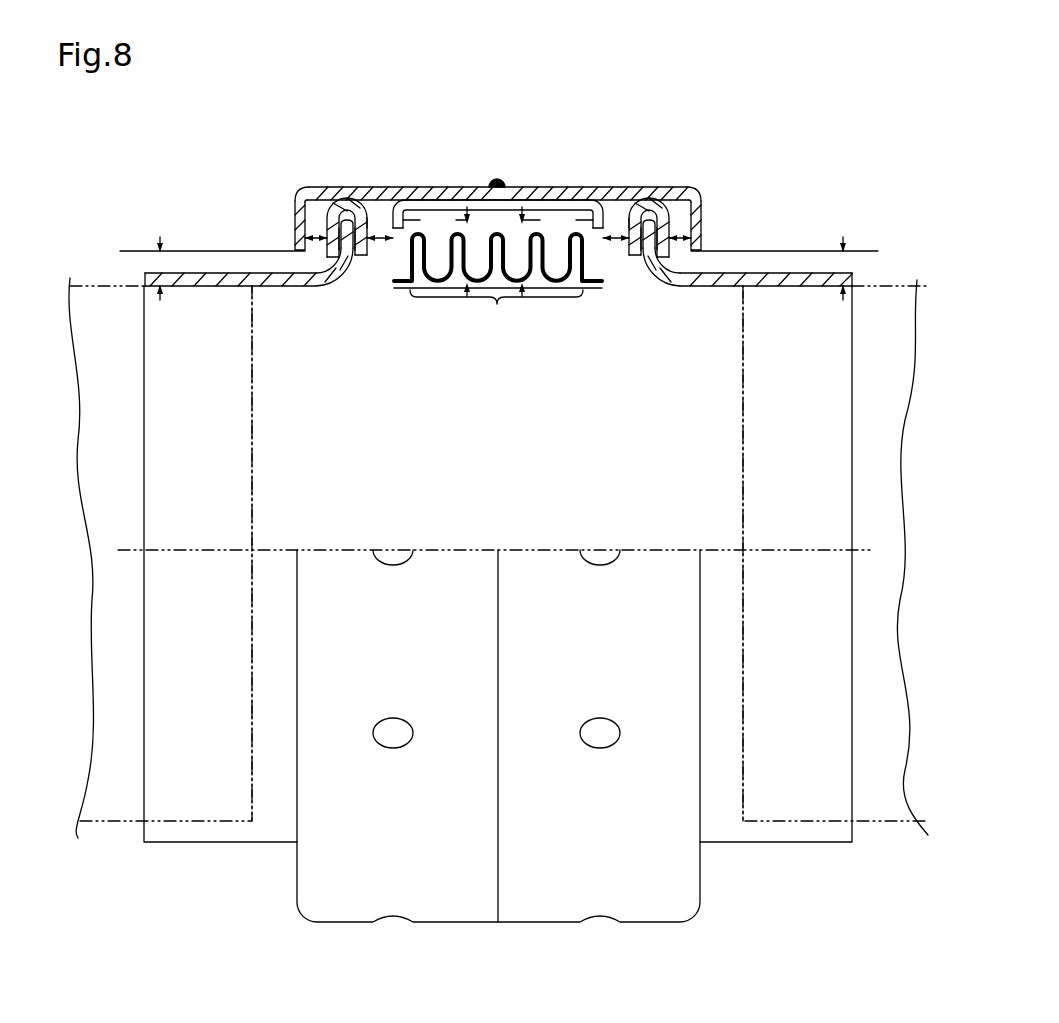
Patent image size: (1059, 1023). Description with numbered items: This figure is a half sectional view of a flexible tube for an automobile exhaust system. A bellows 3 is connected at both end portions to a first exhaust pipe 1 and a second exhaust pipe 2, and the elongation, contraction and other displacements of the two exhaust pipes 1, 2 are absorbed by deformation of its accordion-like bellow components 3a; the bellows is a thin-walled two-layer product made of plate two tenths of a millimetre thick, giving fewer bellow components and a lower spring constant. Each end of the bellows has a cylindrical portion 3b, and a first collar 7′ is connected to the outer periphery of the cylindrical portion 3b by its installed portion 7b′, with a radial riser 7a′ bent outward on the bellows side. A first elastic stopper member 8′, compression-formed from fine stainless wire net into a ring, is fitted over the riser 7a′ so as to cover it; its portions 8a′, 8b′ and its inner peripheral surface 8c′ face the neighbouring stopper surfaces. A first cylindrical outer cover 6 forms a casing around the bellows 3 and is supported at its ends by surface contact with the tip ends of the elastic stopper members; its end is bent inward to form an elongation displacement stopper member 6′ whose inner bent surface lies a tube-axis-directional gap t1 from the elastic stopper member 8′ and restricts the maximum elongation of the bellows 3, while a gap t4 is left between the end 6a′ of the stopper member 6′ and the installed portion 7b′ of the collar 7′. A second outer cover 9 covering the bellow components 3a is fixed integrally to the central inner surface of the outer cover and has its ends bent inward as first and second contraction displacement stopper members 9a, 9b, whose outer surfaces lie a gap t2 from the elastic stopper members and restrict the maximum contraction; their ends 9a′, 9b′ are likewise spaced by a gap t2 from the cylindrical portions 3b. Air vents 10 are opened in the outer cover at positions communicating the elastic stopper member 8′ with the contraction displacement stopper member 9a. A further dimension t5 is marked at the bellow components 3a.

The first exhaust pipe 1 is at (98, 280).
The second exhaust pipe 2 is at (871, 281).
The bellows 3 is at (363, 289).
The bellow components 3a is at (498, 288).
The cylindrical portion 3b is at (290, 292).
The first cylindrical outer cover 6 is at (459, 184).
The first elongation displacement stopper member 6′ is at (300, 213).
The end of first elongation displacement stopper member 6a′ is at (296, 238).
The first collar 7′ is at (221, 267).
The radial riser 7a′ is at (347, 220).
The installed portion of first collar 7b′ is at (165, 290).
The first elastic stopper member 8′ is at (345, 199).
The left clamp inner leg 8a′ is at (338, 200).
The left clamp outer leg 8b′ is at (330, 232).
The inner peripheral surface 8c′ is at (380, 200).
The second outer cover 9 is at (530, 200).
The first contraction displacement stopper member 9a is at (436, 218).
The second contraction displacement stopper member 9b is at (556, 218).
The end of first contraction displacement stopper member 9a′ is at (410, 289).
The end of second contraction displacement stopper member 9b′ is at (585, 289).
The air vents 10 is at (398, 200).
The tube-axis-directional gap t1 is at (314, 262).
The tube-axis-directional gap t2 is at (394, 230).
The gap t4 is at (157, 263).
The spring thickness t5 is at (467, 297).